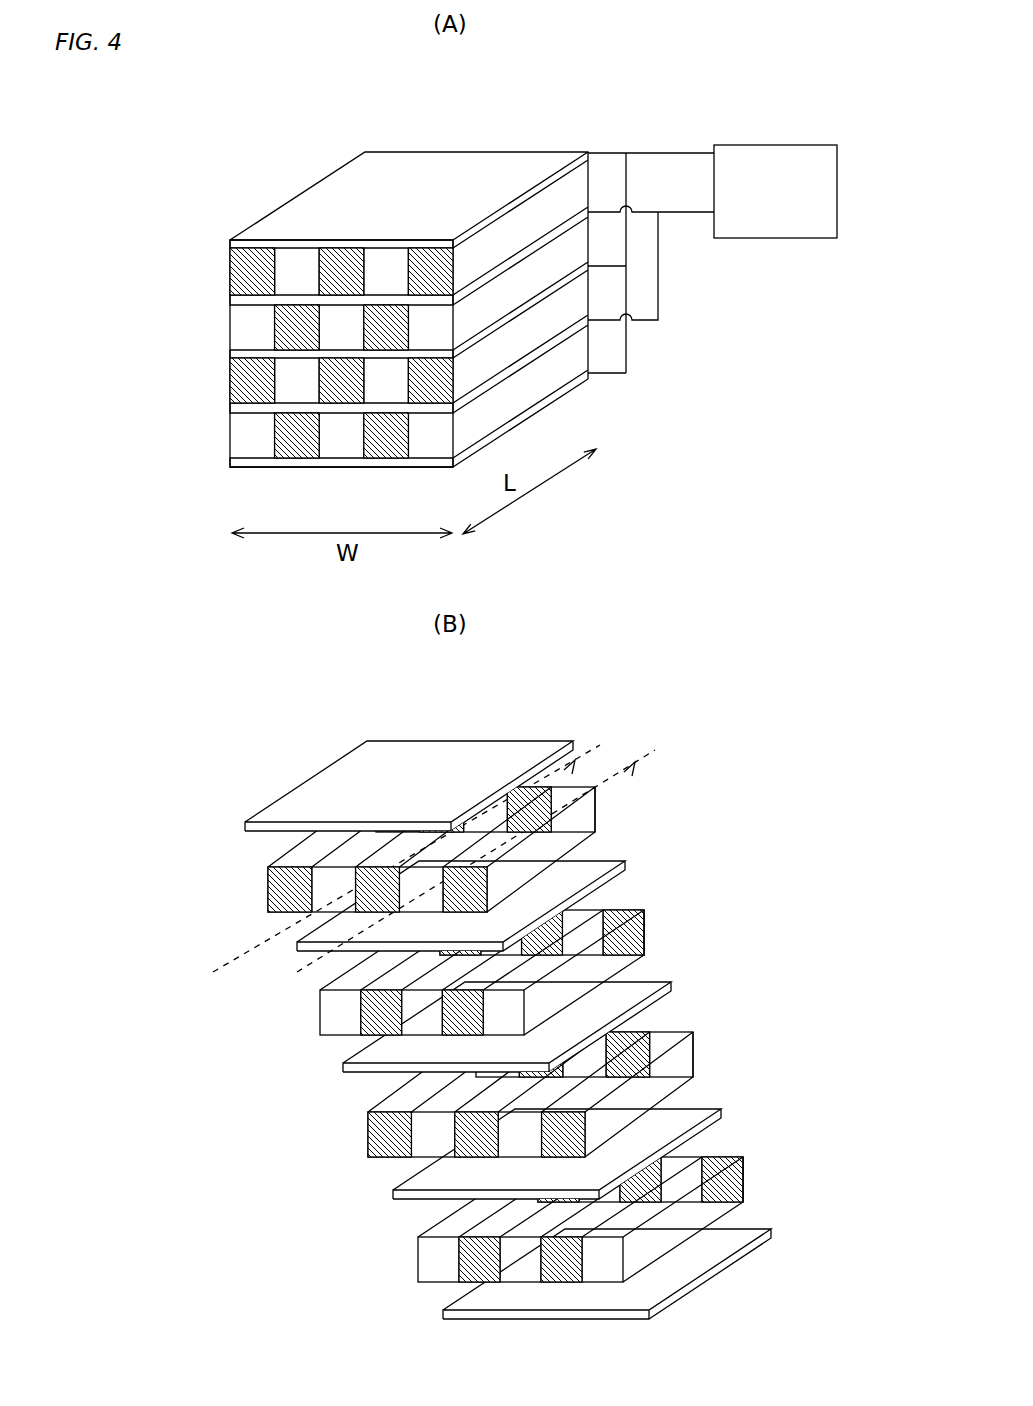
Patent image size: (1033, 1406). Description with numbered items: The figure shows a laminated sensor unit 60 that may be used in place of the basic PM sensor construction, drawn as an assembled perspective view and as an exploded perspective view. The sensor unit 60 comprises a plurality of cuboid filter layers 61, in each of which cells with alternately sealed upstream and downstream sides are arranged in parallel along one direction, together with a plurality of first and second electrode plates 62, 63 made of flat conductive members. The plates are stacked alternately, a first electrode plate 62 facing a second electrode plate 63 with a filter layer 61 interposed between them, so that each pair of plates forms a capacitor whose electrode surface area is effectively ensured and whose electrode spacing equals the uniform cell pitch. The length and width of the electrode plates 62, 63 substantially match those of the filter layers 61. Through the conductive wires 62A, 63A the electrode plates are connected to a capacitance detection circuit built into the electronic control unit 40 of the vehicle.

The laminated sensor unit 60 is at (503, 124).
The filter layer 61 is at (230, 272).
The first electrode plate 62 is at (230, 241).
The second electrode plate 63 is at (230, 300).
The conductive wire 62A is at (673, 152).
The conductive wire 63A is at (683, 214).
The electronic control unit 40 is at (787, 205).